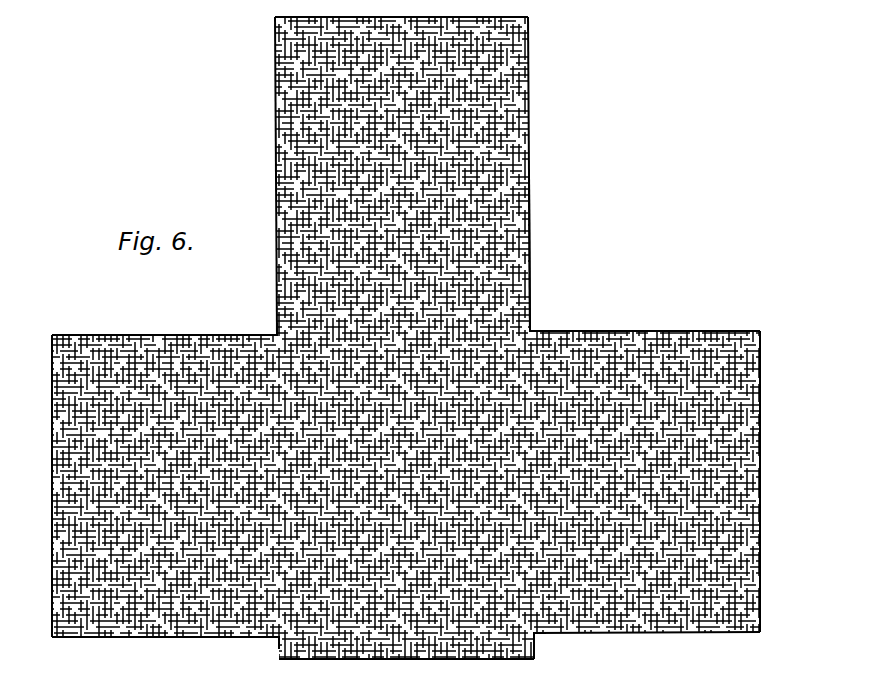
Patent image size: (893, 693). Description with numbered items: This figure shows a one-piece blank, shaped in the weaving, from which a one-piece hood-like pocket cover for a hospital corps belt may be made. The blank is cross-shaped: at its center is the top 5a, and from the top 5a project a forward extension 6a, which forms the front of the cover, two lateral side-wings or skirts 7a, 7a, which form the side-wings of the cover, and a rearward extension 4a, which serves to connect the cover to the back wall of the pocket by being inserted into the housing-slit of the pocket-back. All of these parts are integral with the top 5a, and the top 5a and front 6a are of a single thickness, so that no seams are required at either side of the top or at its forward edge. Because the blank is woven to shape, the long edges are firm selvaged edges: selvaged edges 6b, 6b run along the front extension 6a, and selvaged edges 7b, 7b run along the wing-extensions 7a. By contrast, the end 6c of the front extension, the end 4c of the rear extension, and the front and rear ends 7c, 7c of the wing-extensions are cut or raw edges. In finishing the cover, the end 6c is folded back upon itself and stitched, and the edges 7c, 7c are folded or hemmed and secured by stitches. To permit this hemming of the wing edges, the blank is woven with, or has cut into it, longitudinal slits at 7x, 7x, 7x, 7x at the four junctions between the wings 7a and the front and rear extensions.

The front extension 6a is at (532, 156).
The selvaged edges of front extension 6b is at (275, 148).
The end of front extension 6c is at (488, 14).
The top 5a is at (492, 358).
The side-wings or skirts 7a is at (53, 498).
The selvaged edges of wing-extensions 7b is at (52, 414).
The front and rear ends of wing-extensions 7c is at (153, 334).
The longitudinal slits 7x is at (272, 346).
The rear extension 4a is at (534, 659).
The end of rear extension 4c is at (405, 659).